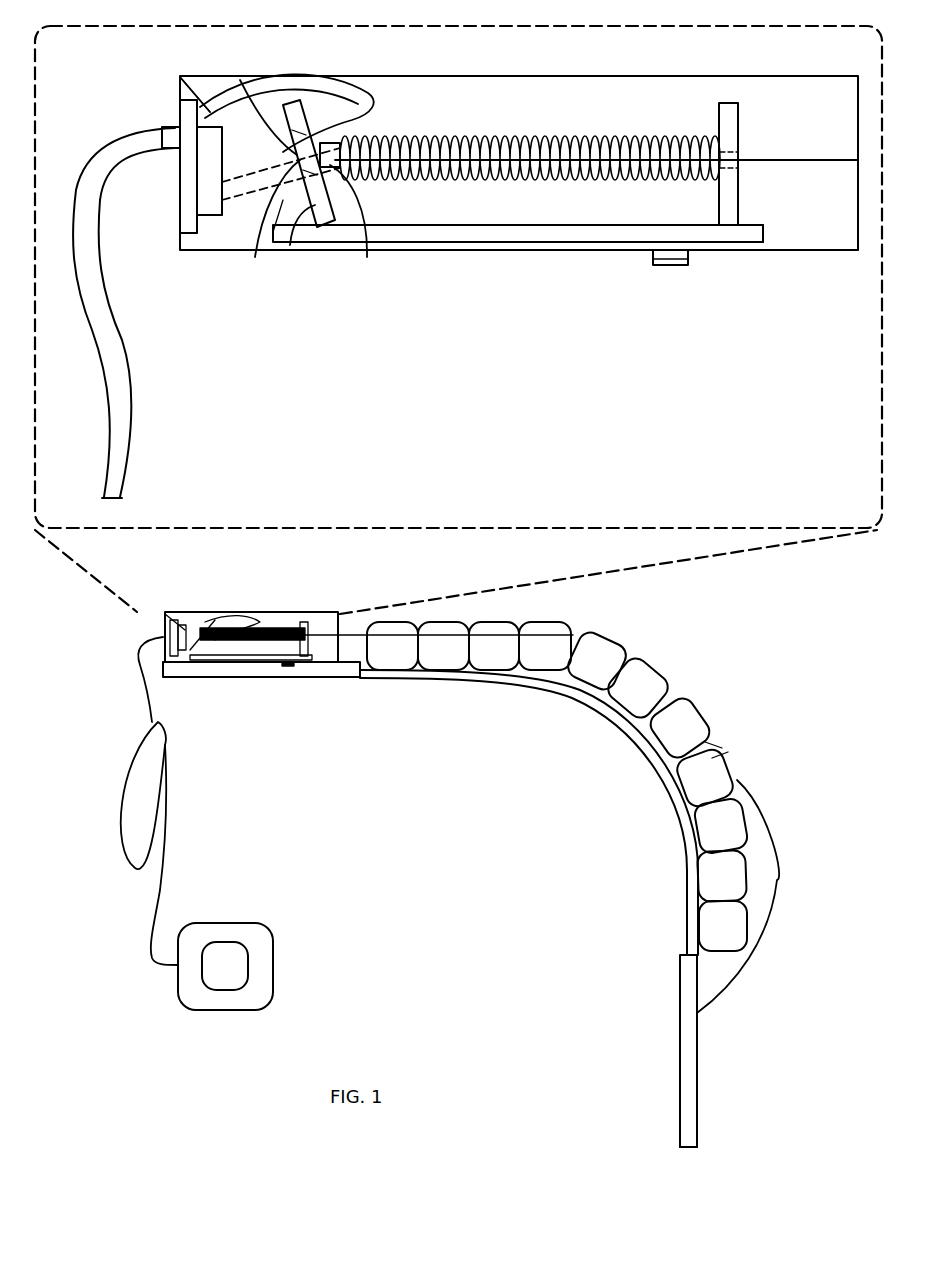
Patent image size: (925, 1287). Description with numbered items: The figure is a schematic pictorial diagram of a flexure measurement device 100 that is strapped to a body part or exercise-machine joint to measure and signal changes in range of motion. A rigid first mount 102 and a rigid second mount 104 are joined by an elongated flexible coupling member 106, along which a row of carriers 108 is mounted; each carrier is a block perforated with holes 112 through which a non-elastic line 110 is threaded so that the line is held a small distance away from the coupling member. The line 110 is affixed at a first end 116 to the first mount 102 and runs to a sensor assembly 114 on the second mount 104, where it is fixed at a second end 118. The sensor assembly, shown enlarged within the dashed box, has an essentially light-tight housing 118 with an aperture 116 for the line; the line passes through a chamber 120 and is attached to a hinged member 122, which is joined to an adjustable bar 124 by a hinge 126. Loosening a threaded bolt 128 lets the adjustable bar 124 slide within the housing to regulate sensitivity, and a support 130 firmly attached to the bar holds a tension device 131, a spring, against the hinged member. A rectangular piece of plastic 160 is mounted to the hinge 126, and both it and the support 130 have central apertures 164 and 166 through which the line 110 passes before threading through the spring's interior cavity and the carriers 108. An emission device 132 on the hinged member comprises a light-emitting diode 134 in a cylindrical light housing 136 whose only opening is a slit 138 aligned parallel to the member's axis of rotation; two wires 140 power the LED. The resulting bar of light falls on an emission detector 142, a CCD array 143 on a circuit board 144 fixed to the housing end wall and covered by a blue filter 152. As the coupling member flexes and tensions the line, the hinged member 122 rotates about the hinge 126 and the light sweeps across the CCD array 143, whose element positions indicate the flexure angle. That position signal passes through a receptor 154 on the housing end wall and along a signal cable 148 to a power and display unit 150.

The flexure measurement device 100 is at (760, 684).
The first mount 102 is at (697, 1135).
The second mount 104 is at (262, 678).
The elongated flexible coupling member 106 is at (497, 680).
The carriers 108 is at (527, 630).
The line 110 is at (728, 968).
The holes 112 is at (715, 745).
The sensor assembly 114 is at (258, 612).
The first end 116 is at (714, 1051).
The housing 118 is at (830, 252).
The chamber 120 is at (780, 118).
The hinged member 122 is at (281, 224).
The adjustable bar 124 is at (495, 242).
The hinge 126 is at (343, 237).
The threaded bolt 128 is at (682, 268).
The support 130 is at (738, 212).
The tension device 131 is at (483, 135).
The emission device 132 is at (328, 140).
The light-emitting diode 134 is at (320, 132).
The light housing 136 is at (362, 227).
The slit 138 is at (240, 78).
The wires 140 is at (227, 92).
The emission detector 142 is at (205, 199).
The CCD array 143 is at (205, 208).
The circuit board 144 is at (188, 240).
The signal cable 148 is at (128, 448).
The power and display unit 150 is at (273, 990).
The blue filter 152 is at (195, 240).
The receptor 154 is at (166, 128).
The rectangular piece of plastic 160 is at (316, 82).
The aperture 164 is at (258, 248).
The aperture 166 is at (730, 150).